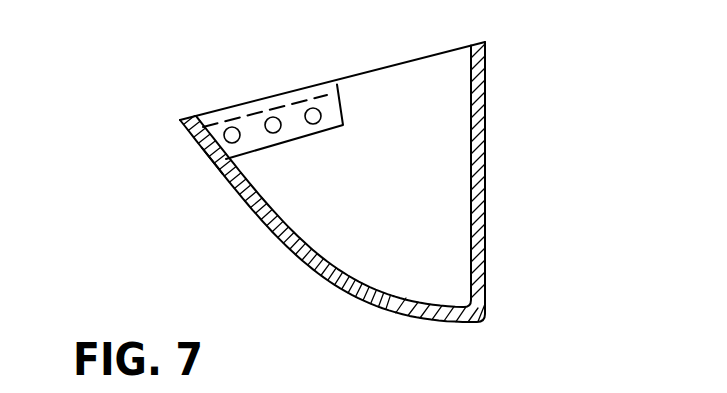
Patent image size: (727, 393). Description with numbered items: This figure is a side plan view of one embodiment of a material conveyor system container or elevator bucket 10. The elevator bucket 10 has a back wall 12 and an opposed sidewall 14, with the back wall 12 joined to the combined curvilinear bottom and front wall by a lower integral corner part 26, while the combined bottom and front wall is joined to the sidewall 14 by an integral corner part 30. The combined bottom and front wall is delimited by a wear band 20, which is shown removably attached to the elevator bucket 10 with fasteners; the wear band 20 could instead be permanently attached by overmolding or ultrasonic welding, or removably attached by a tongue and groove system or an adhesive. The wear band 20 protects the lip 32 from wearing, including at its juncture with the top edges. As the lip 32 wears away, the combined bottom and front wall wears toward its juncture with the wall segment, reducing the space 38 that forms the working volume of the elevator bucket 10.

The elevator bucket 10 is at (328, 166).
The back wall 12 is at (485, 148).
The sidewall 14 is at (394, 231).
The wear band 20 is at (180, 148).
The lower integral corner part 26 is at (488, 302).
The integral corner part 30 is at (182, 122).
The lip 32 is at (212, 172).
The space 38 is at (377, 72).